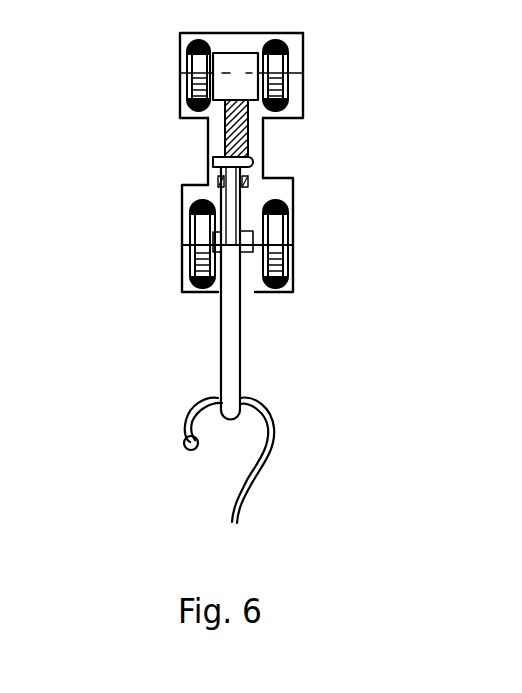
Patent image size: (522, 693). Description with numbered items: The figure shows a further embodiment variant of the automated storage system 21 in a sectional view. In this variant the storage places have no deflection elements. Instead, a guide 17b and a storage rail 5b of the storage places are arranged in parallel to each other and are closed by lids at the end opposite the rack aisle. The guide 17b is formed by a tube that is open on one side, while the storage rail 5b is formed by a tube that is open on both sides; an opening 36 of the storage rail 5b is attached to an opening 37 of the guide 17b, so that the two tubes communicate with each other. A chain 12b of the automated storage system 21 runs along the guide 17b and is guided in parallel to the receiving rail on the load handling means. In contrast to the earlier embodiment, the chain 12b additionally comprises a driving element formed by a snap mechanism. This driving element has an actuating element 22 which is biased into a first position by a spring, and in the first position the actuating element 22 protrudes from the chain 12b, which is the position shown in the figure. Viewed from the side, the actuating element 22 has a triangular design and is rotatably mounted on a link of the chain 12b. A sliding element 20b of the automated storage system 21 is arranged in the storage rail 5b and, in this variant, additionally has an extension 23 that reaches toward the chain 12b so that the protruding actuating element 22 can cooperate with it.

The automated storage system 21 is at (128, 52).
The chain 12b is at (238, 65).
The guide 17b is at (298, 80).
The actuating element 22 is at (228, 128).
The opening of the guide 37 is at (256, 125).
The extension 23 is at (237, 163).
The opening of the storage rail 36 is at (210, 187).
The storage rail 5b is at (298, 203).
The sliding element 20b is at (232, 245).